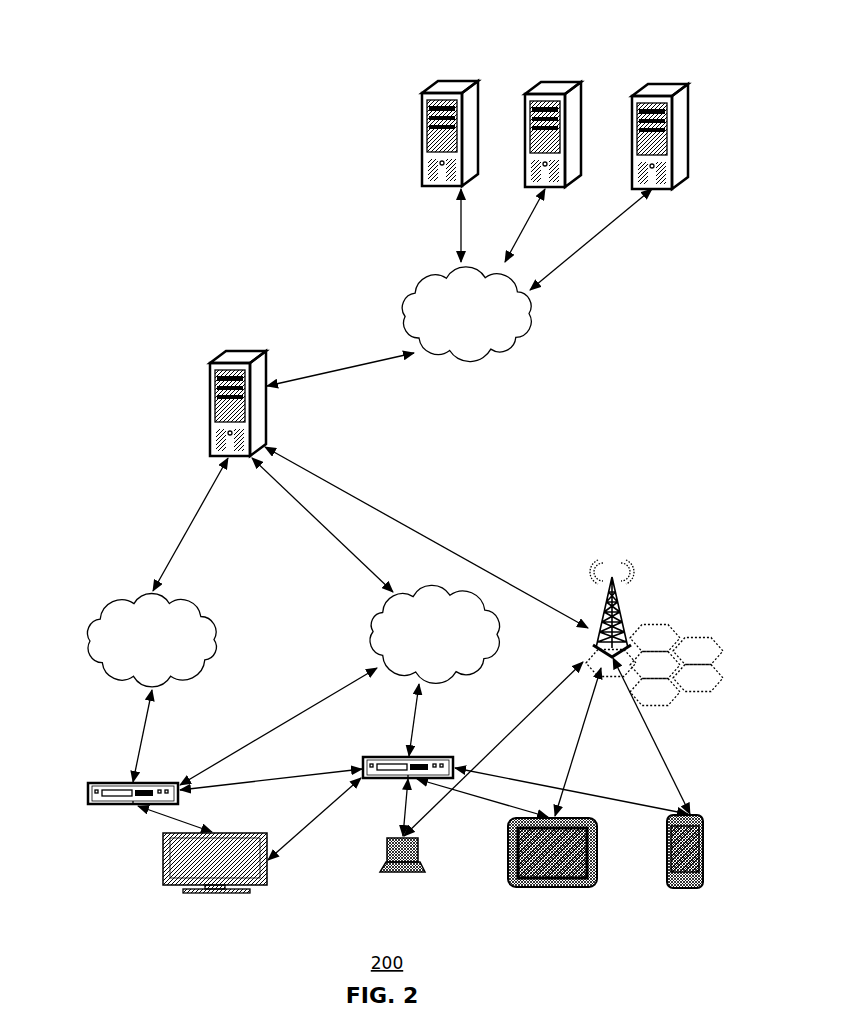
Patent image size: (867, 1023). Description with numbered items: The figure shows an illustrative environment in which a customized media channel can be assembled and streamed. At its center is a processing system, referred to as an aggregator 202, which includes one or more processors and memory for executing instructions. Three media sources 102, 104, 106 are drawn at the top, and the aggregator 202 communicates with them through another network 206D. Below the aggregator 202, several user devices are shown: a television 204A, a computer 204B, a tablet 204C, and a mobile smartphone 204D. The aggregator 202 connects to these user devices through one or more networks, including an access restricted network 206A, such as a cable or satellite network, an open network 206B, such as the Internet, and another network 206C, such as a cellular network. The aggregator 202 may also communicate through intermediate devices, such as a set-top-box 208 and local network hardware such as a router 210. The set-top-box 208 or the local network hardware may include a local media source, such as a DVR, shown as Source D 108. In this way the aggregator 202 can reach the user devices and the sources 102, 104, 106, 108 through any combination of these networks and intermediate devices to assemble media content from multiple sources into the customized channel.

The source 102 is at (437, 84).
The source 104 is at (577, 83).
The source 106 is at (684, 84).
The Source D 108 is at (88, 793).
The aggregator 202 is at (210, 407).
The television 204A is at (215, 880).
The computer 204B is at (402, 878).
The tablet 204C is at (552, 870).
The mobile smartphone 204D is at (687, 869).
The access restricted network 206A is at (152, 639).
The open network 206B is at (434, 634).
The another network 206C is at (654, 630).
The another network 206D is at (466, 314).
The set-top-box (STB) 208 is at (80, 772).
The router 210 is at (455, 746).